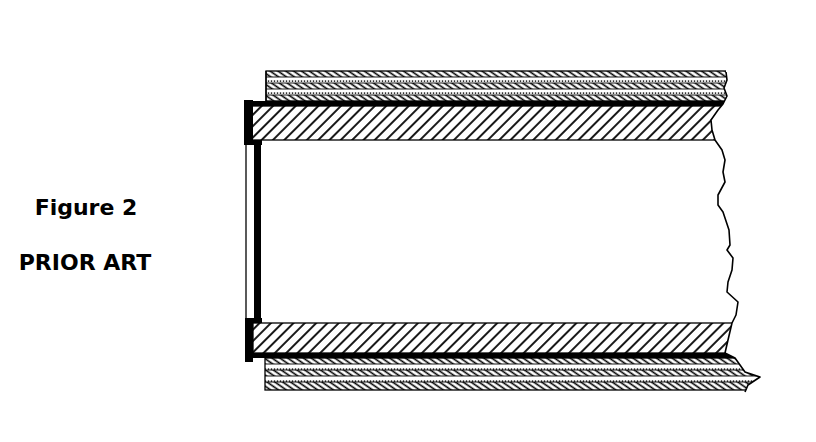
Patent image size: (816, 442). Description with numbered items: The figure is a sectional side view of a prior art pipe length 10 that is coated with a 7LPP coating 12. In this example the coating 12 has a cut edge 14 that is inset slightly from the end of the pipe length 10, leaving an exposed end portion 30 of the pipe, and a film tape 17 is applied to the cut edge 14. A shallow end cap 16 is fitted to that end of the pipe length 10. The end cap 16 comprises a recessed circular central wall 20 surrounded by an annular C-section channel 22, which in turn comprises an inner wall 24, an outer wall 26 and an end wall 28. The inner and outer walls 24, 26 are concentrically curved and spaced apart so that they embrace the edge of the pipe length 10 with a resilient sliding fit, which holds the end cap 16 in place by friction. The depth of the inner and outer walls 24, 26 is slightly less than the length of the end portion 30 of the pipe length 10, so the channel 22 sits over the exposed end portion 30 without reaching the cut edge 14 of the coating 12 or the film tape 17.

The pipe length 10 is at (692, 190).
The 7LPP coating 12 is at (483, 93).
The cut edge 14 is at (275, 78).
The end cap 16 is at (269, 231).
The film tape 17 is at (265, 87).
The central wall 20 is at (262, 160).
The annular C-section channel 22 is at (226, 344).
The inner wall 24 is at (248, 147).
The outer wall 26 is at (250, 362).
The end wall 28 is at (245, 121).
The end portion 30 is at (278, 338).